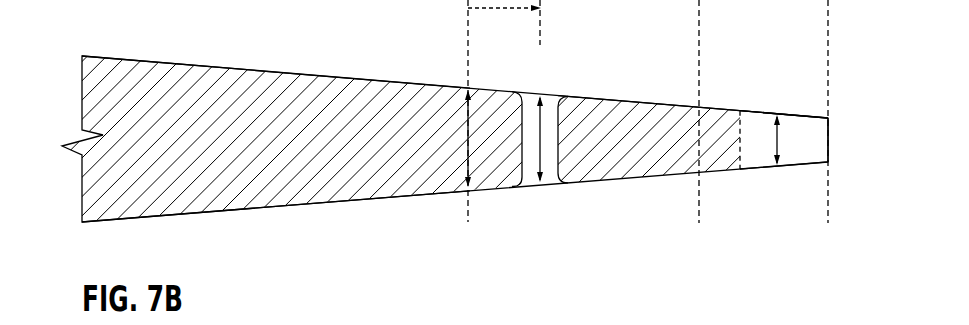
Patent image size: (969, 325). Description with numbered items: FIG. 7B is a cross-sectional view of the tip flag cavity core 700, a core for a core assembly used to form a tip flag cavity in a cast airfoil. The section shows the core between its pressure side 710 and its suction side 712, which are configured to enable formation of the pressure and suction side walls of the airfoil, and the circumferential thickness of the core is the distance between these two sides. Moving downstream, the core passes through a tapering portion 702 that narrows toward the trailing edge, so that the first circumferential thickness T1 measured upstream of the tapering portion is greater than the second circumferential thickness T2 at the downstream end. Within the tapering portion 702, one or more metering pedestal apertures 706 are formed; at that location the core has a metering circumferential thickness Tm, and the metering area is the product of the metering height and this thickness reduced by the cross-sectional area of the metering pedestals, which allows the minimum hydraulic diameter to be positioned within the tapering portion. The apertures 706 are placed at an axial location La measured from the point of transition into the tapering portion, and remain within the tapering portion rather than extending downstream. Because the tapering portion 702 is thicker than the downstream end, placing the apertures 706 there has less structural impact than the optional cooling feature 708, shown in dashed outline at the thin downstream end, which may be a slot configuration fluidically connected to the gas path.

The tip flag cavity core 700 is at (137, 202).
The tapering portion 702 is at (595, 96).
The metering pedestal aperture 706 is at (552, 173).
The cooling feature 708 is at (790, 130).
The pressure side 710 is at (340, 203).
The suction side 712 is at (358, 77).
The first circumferential thickness T1 is at (465, 148).
The metering circumferential thickness Tm is at (545, 152).
The second circumferential thickness T2 is at (772, 128).
The axial location La is at (490, 10).